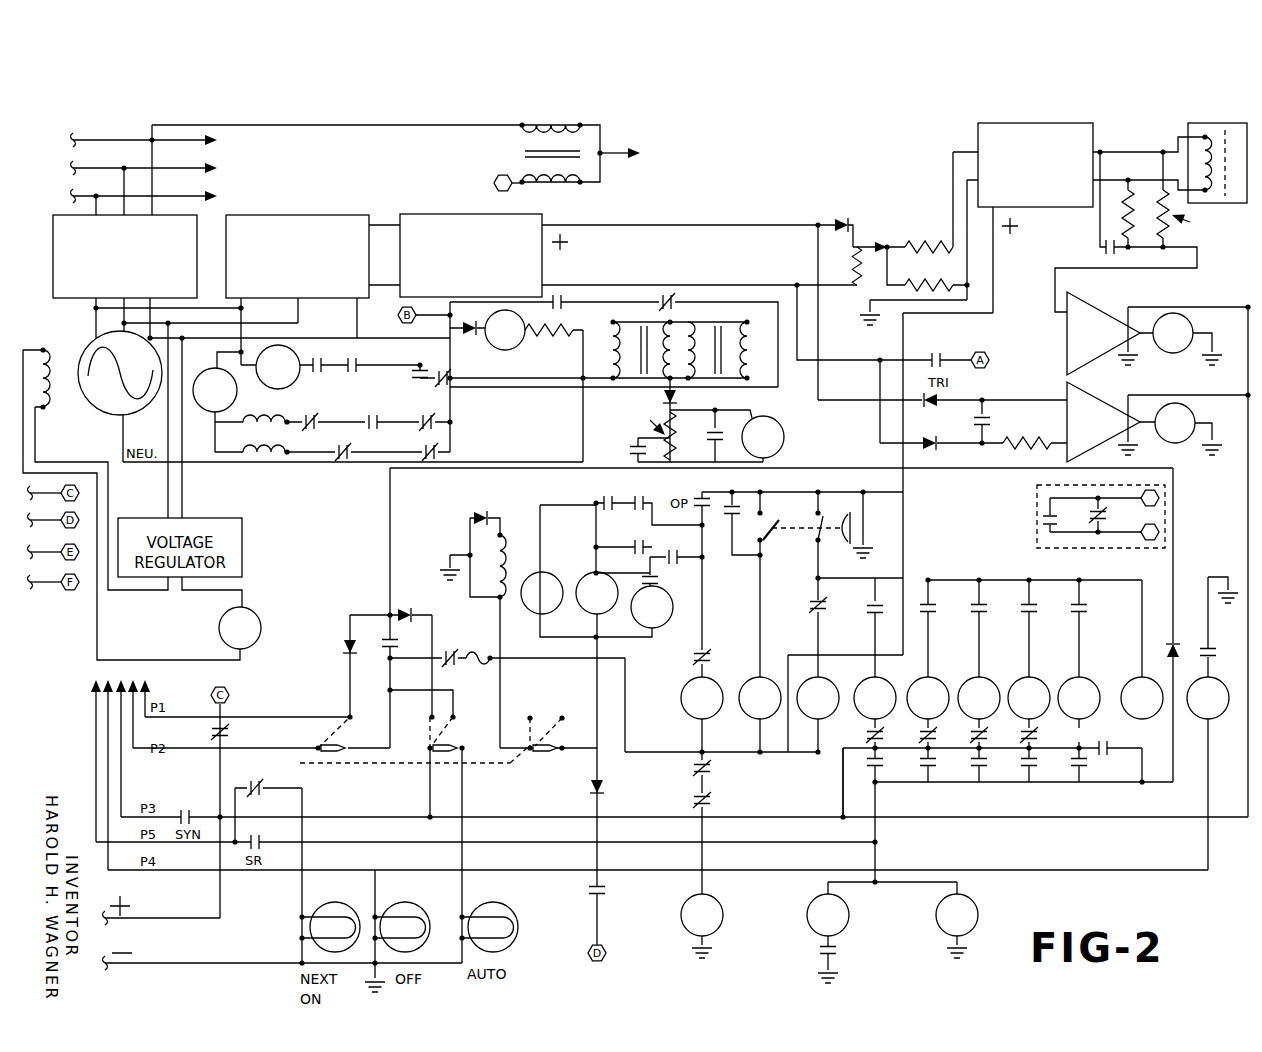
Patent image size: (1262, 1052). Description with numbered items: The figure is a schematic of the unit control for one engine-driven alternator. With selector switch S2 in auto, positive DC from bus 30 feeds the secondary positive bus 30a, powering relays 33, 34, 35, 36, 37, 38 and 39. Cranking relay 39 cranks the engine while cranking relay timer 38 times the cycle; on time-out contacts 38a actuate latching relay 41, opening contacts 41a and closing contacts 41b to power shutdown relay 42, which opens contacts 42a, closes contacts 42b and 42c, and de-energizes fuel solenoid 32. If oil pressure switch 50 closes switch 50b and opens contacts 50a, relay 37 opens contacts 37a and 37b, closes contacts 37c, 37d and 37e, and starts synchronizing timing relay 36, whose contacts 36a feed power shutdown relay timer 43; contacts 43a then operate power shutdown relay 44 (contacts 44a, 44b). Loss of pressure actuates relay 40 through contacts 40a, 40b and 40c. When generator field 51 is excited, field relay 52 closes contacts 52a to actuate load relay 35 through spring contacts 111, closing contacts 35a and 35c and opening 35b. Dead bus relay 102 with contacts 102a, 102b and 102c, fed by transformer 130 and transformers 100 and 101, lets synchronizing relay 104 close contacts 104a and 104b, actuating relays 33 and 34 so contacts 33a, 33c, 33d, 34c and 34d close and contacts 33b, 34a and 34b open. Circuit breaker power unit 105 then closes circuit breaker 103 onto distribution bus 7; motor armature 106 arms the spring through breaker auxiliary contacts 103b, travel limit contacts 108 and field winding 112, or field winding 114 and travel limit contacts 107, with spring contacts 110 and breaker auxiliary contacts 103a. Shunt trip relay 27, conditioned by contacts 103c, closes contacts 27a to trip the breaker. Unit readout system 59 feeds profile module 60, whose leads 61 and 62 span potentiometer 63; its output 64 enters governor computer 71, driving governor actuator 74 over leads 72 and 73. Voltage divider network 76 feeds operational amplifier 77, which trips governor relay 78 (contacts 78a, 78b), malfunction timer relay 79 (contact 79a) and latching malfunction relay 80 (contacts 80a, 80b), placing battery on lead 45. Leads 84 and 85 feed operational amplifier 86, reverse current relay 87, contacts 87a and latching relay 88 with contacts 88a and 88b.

The primary distribution bus 7 is at (236, 166).
The circuit breaker 103 is at (58, 214).
The unit readout system 59 is at (288, 215).
The profile module 60 is at (448, 214).
The transformer 130 is at (522, 152).
The lead 61 is at (688, 225).
The lead 62 is at (574, 276).
The dead bus relay 102 is at (550, 335).
The dead bus relay contacts 102a is at (552, 300).
The dead bus relay contacts 102b is at (664, 296).
The dead bus relay contacts 102c is at (228, 732).
The breaker auxiliary contacts 103a is at (447, 376).
The breaker auxiliary contacts 103b is at (440, 483).
The breaker auxiliary contacts 103c is at (818, 955).
The shunt trip relay contacts 27a is at (430, 385).
The shunt trip relay 27 is at (849, 915).
The transformer 101 is at (650, 322).
The transformer 100 is at (722, 312).
The synchronizing relay 104 is at (772, 421).
The synchronizing relay contacts 104a is at (594, 507).
The synchronizing relay contacts 104b is at (200, 797).
The circuit breaker power unit 105 is at (289, 348).
The motor armature 106 is at (197, 405).
The spring contacts 110 is at (335, 380).
The field winding 114 is at (275, 412).
The travel limit contacts 107 is at (313, 421).
The field winding 112 is at (260, 460).
The travel limit contacts 108 is at (338, 460).
The relay contacts 33c is at (428, 460).
The relay contacts 34c is at (358, 368).
The load relay contacts 35b is at (433, 428).
The load relay contacts 35c is at (638, 436).
The load relay contacts 35a is at (590, 500).
The relay contacts 33a is at (594, 549).
The field relay contacts 52a is at (594, 573).
The spring contacts 111 is at (682, 560).
The fuel solenoid 32 is at (469, 540).
The relay 33 is at (521, 597).
The relay 34 is at (588, 612).
The load relay 35 is at (660, 627).
The shutdown relay contacts 42c is at (380, 622).
The shutdown relay contacts 42a is at (462, 645).
The shutdown relay contacts 42b is at (256, 837).
The shutdown relay 42 is at (970, 900).
The secondary positive bus 30a is at (566, 660).
The positive bus 30 is at (192, 918).
The selector switch S2 is at (500, 772).
The relay contacts 34a is at (694, 660).
The relay contacts 34b is at (1103, 536).
The relay contacts 34d is at (590, 892).
The synchronizing timing relay 36 is at (683, 705).
The synchronizing timer contacts 36a is at (1098, 752).
The oil pressure relay 37 is at (753, 715).
The relay contacts 37a is at (710, 770).
The relay contacts 37b is at (812, 602).
The relay contacts 37c is at (732, 492).
The relay contacts 37d is at (872, 606).
The relay contacts 37e is at (772, 487).
The cranking relay timer 38 is at (812, 716).
The cranking timer contacts 38a is at (929, 584).
The cranking relay 39 is at (712, 897).
The oil pressure shutdown relay 40 is at (866, 680).
The relay contacts 40a is at (868, 735).
The relay contacts 40b is at (843, 768).
The relay contacts 40c is at (708, 806).
The latching relay 41 is at (920, 680).
The relay contacts 41a is at (921, 735).
The relay contacts 41b is at (880, 760).
The power shutdown relay timer 43 is at (1132, 680).
The timer contacts 43a is at (985, 572).
The power shutdown relay 44 is at (972, 680).
The relay contacts 44a is at (930, 760).
The relay contacts 44b is at (983, 768).
The lead 45 is at (1173, 472).
The oil pressure switch 50 is at (833, 525).
The pressure switch contacts 50a is at (814, 542).
The pressure switch contacts 50b is at (766, 520).
The generator field 51 is at (47, 410).
The field relay 52 is at (219, 636).
The potentiometer 63 is at (854, 285).
The potentiometer output 64 is at (880, 246).
The governor computer 71 is at (978, 128).
The lead 72 is at (1150, 152).
The lead 73 is at (1150, 180).
The governor actuator 74 is at (1218, 204).
The voltage divider network 76 is at (1180, 226).
The operational amplifier 77 is at (1108, 343).
The governor relay 78 is at (1178, 353).
The governor relay contact 78a is at (1040, 512).
The governor relay contacts 78b is at (1205, 645).
The malfunction timer relay 79 is at (1208, 722).
The malfunction timer contact 79a is at (1080, 585).
The latching malfunction relay 80 is at (1072, 680).
The relay contacts 80a is at (1024, 733).
The relay contacts 80b is at (1033, 760).
The lead 84 is at (866, 362).
The lead 85 is at (835, 312).
The operational amplifier 86 is at (1108, 431).
The reverse current relay 87 is at (1178, 443).
The reverse current relay contacts 87a is at (1030, 585).
The special purpose latching relay 88 is at (1022, 680).
The relay contacts 88a is at (974, 733).
The relay contacts 88b is at (1075, 768).
The relay contacts 33b is at (262, 795).
The relay contacts 33d is at (940, 354).